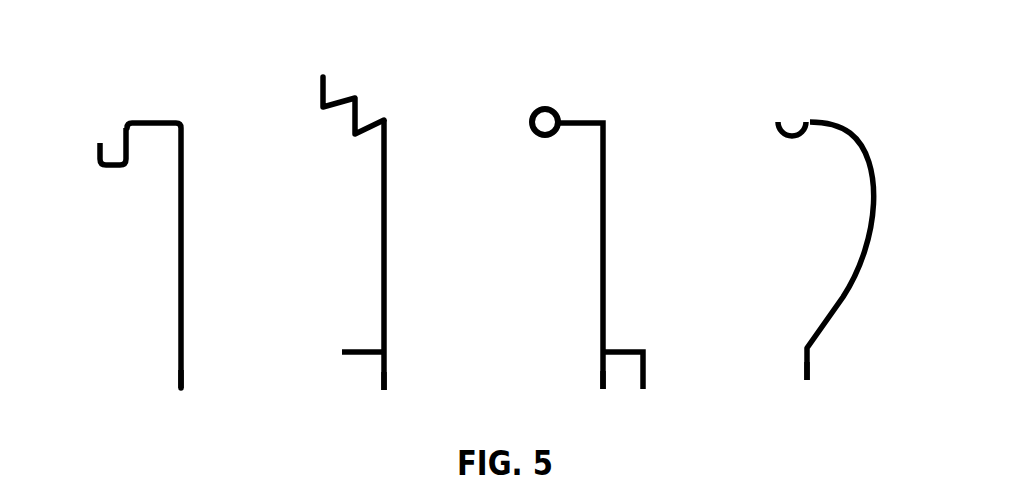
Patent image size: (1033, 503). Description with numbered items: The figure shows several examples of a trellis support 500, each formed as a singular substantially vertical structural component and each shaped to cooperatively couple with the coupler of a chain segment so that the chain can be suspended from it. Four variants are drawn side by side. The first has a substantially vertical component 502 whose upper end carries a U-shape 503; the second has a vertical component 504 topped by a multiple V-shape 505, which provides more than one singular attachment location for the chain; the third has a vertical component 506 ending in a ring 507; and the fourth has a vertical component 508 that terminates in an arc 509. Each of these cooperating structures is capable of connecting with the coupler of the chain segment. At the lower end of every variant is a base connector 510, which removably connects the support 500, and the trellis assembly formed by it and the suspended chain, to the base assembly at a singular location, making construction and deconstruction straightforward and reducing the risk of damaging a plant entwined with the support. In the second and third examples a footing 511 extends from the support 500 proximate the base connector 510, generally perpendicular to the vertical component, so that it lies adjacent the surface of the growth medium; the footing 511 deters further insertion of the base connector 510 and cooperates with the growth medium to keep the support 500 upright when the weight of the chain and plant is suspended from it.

The support 500 is at (103, 100).
The substantially vertical component 502 is at (175, 120).
The U-shape 503 is at (97, 167).
The substantially vertical component 504 is at (388, 192).
The multiple V-shape 505 is at (330, 127).
The substantially vertical component 506 is at (605, 190).
The ring 507 is at (555, 105).
The substantially vertical component 508 is at (842, 307).
The arc 509 is at (788, 140).
The base connector 510 is at (168, 392).
The footing 511 is at (350, 347).